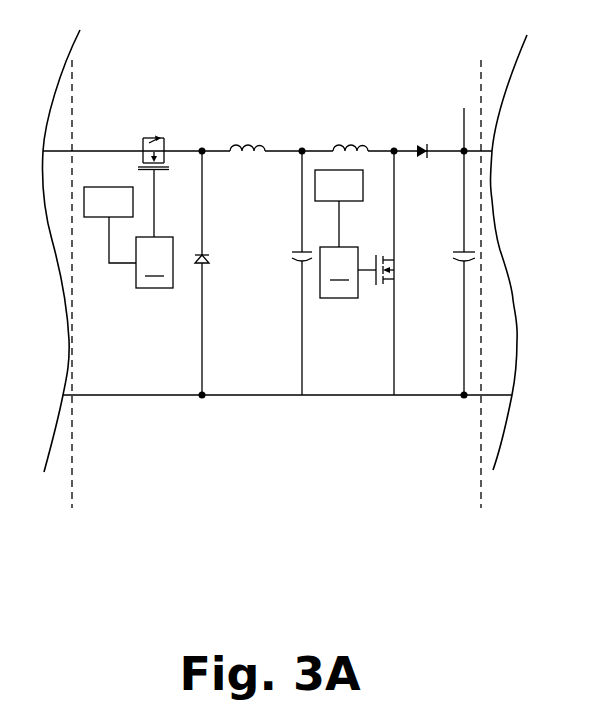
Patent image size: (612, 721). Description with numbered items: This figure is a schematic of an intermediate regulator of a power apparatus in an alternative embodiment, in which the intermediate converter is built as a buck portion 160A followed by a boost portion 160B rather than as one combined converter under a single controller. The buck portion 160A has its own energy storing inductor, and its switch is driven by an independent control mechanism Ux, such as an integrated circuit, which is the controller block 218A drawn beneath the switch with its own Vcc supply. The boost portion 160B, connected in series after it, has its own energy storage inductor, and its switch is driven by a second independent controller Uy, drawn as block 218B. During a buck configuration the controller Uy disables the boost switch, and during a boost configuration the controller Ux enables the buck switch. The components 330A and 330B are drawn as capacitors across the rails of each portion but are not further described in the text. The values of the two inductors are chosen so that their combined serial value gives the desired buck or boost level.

The buck portion 160A is at (243, 78).
The boost portion 160B is at (397, 78).
The first control unit Ux 218A is at (153, 289).
The second control unit Uy 218B is at (340, 298).
The first capacitor 330A is at (293, 263).
The second capacitor 330B is at (458, 263).